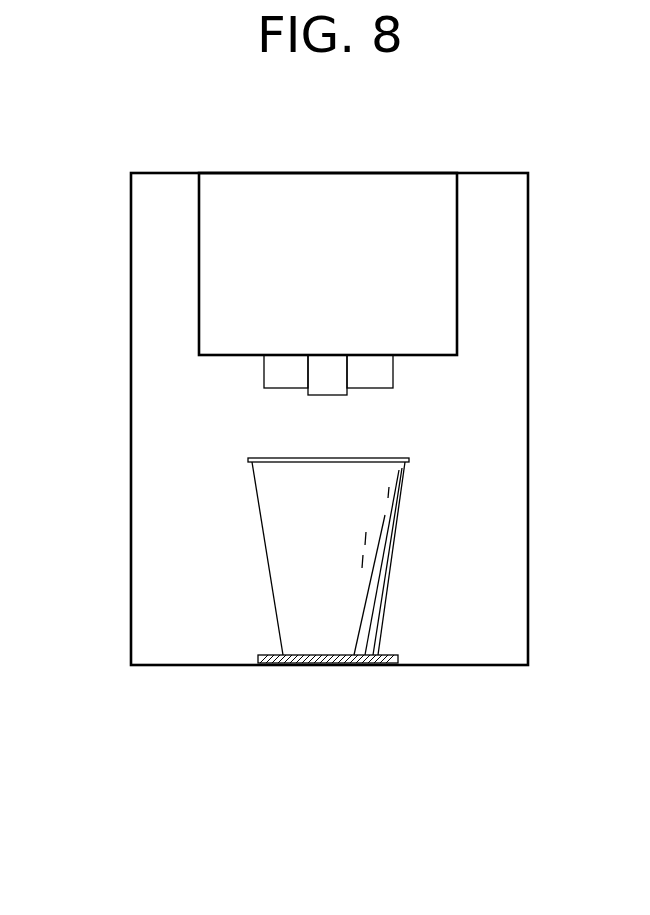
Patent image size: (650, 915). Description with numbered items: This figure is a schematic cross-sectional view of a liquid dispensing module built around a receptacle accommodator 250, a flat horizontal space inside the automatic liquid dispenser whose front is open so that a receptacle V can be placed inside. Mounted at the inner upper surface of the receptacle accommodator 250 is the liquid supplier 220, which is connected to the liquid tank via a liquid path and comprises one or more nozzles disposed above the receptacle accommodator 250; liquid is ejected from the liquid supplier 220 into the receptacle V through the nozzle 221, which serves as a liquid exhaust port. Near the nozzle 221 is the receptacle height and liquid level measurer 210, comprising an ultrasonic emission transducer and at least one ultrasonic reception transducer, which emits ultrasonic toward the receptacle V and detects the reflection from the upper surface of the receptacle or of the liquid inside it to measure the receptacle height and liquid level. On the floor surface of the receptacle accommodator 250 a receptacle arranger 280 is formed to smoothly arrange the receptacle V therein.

The liquid supplier 220 is at (186, 274).
The receptacle height and liquid level measurer 210 is at (287, 375).
The nozzle 221 is at (330, 388).
The receptacle V is at (281, 552).
The receptacle arranger 280 is at (385, 655).
The receptacle accommodator 250 is at (197, 666).